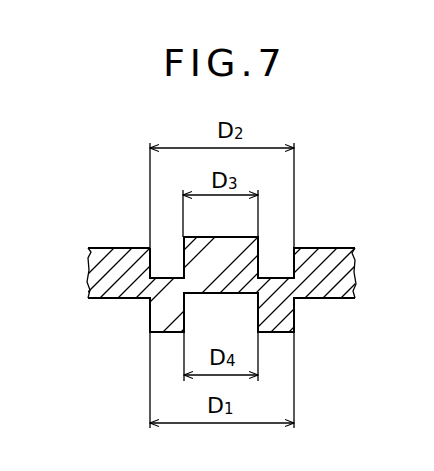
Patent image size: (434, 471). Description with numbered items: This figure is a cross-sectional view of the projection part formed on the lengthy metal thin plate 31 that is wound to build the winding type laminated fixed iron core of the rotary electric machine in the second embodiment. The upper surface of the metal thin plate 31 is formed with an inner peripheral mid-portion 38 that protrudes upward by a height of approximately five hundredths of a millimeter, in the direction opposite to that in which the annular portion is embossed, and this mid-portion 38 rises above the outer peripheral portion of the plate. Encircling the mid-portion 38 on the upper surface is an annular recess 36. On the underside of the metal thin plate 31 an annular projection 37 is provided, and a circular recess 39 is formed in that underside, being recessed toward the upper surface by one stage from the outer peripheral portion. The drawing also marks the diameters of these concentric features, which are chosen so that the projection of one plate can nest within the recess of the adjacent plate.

The lengthy metal thin plate 31 is at (117, 283).
The annular recess 36 is at (157, 273).
The annular projection 37 is at (163, 334).
The inner peripheral mid-portion 38 is at (190, 237).
The circular recess 39 is at (203, 296).